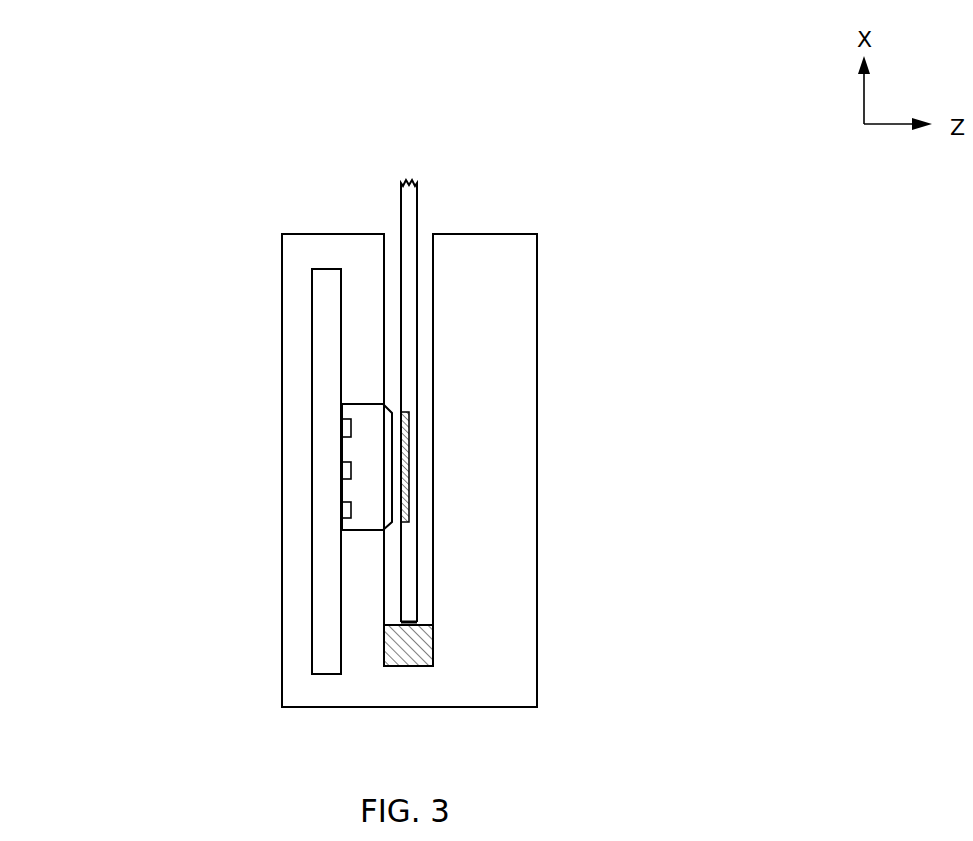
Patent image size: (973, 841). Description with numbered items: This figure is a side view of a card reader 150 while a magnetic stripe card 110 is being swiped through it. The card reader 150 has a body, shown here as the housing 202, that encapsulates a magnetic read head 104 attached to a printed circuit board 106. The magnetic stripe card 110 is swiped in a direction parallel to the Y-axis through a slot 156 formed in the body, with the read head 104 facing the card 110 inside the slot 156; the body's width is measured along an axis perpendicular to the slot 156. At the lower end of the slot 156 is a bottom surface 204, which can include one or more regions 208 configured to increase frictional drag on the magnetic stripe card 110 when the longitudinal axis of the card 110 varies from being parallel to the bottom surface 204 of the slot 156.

The card reader 150 is at (166, 199).
The housing frame 202 is at (528, 689).
The slot 156 is at (427, 240).
The printed circuit board 106 is at (320, 269).
The magnetic stripe card 110 is at (409, 210).
The region 208 is at (437, 635).
The bottom surface 204 is at (405, 670).
The magnetic read head 104 is at (363, 403).